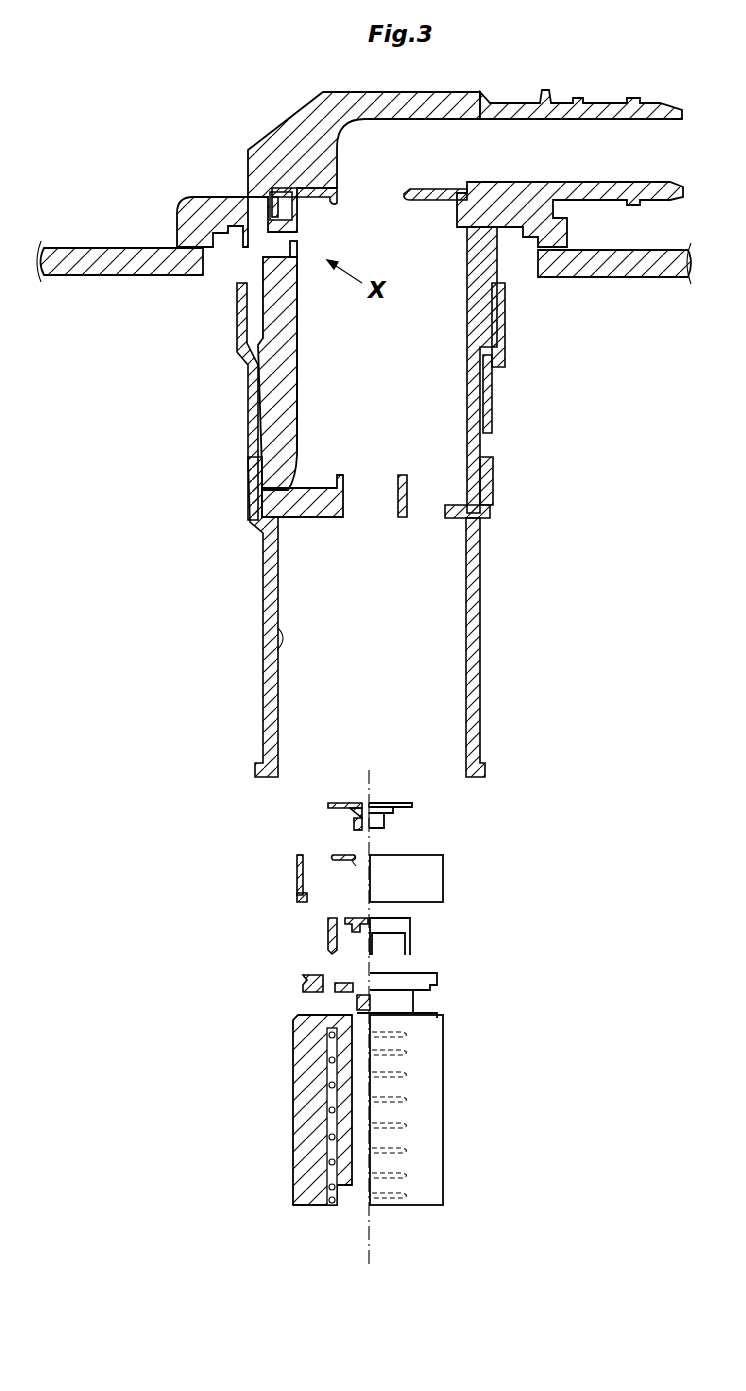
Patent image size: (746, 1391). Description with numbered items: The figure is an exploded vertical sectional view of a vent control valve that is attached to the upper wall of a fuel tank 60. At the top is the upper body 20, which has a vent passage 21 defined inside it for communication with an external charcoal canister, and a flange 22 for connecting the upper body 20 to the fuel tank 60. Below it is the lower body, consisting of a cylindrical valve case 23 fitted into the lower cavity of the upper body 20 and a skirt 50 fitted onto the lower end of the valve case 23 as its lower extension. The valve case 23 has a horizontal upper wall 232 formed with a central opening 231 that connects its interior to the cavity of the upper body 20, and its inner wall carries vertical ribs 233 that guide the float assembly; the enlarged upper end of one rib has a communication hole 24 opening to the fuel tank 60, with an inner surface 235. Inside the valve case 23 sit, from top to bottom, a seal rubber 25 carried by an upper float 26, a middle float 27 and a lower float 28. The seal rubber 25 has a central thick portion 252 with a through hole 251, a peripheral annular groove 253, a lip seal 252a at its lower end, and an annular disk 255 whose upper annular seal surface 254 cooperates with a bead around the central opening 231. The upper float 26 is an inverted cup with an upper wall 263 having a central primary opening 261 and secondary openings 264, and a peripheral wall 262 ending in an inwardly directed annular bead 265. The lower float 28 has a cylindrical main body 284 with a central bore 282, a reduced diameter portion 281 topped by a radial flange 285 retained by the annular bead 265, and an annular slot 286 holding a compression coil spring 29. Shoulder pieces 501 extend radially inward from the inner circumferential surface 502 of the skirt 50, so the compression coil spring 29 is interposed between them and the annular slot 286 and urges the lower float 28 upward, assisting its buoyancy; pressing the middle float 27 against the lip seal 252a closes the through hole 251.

The upper body 20 is at (288, 128).
The vent passage 21 is at (586, 104).
The flange 22 is at (190, 217).
The valve case 23 is at (262, 406).
The communication hole 24 is at (300, 243).
The seal rubber 25 is at (406, 803).
The upper float 26 is at (444, 879).
The middle float 27 is at (411, 926).
The lower float 28 is at (440, 1095).
The compression coil spring 29 is at (405, 1128).
The skirt 50 is at (266, 576).
The fuel tank 60 is at (661, 276).
The central opening 231 is at (340, 194).
The upper wall 232 is at (437, 188).
The vertical ribs 233 is at (298, 392).
The inner surface 235 is at (300, 259).
The through hole 251 is at (368, 802).
The central thick portion 252 is at (352, 822).
The lip seal 252a is at (356, 829).
The peripheral annular groove 253 is at (350, 810).
The annular seal surface 254 is at (346, 803).
The annular disk 255 is at (414, 805).
The central primary opening 261 is at (356, 862).
The peripheral wall 262 is at (298, 879).
The upper wall 263 is at (332, 857).
The secondary openings 264 is at (312, 860).
The annular bead 265 is at (298, 900).
The reduced diameter portion 281 is at (356, 1001).
The central bore 282 is at (354, 1188).
The cylindrical main body 284 is at (293, 1071).
The radial flange 285 is at (439, 980).
The annular slot 286 is at (330, 1153).
The shoulder pieces 501 is at (314, 488).
The inner circumferential surface 502 is at (274, 657).